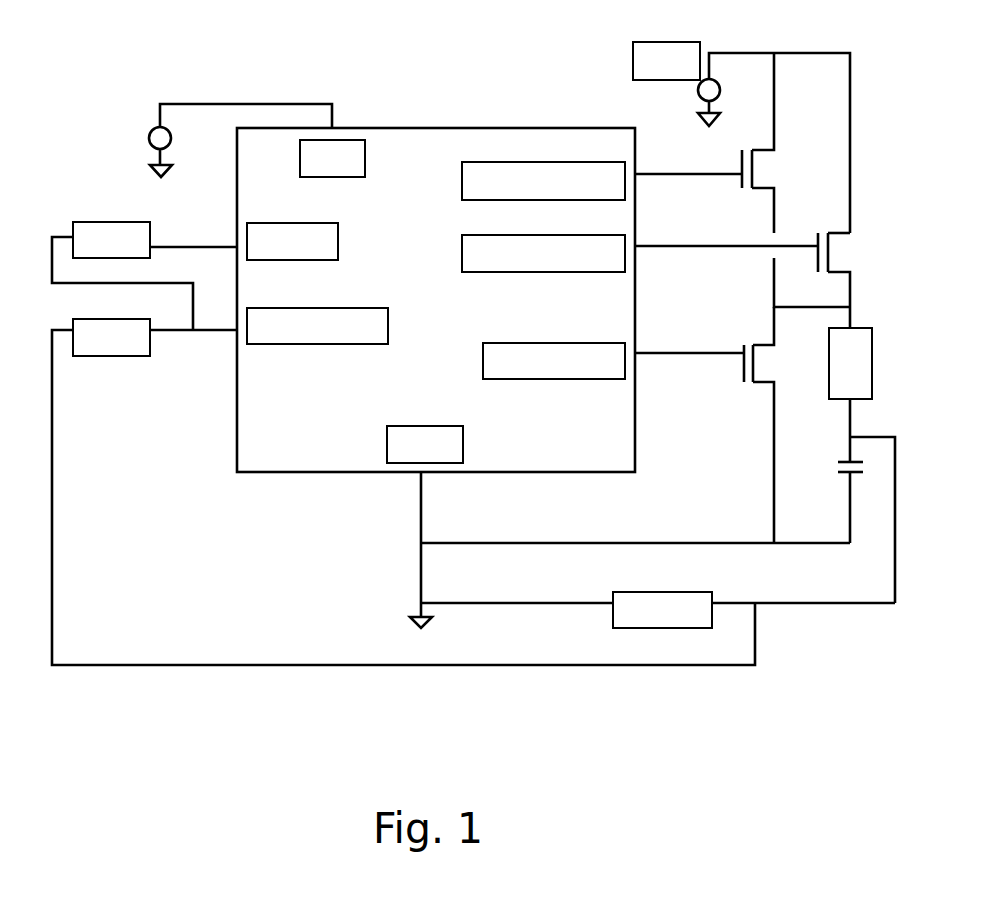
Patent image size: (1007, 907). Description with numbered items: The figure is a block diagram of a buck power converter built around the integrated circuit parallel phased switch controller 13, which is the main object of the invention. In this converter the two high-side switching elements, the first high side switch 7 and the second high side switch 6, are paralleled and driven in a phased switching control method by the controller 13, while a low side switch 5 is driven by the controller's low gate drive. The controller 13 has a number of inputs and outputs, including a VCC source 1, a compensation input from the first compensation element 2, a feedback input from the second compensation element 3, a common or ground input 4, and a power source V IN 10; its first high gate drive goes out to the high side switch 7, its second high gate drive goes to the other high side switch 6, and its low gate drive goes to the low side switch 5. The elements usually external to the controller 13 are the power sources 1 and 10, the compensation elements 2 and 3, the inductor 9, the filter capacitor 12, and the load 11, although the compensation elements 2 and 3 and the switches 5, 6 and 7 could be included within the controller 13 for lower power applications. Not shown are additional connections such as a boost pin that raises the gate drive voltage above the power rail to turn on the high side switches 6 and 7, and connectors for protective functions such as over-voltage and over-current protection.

The VCC source 1 is at (150, 137).
The compensation element Z2 2 is at (113, 222).
The compensation element Z1 3 is at (133, 357).
The ground input 4 is at (410, 623).
The low side switch Q3 5 is at (774, 360).
The high side switch Q2 6 is at (855, 252).
The high side switch Q1 7 is at (775, 173).
The inductor 9 is at (872, 395).
The power source V IN 10 is at (721, 90).
The load 11 is at (698, 592).
The filter capacitor 12 is at (830, 468).
The integrated circuit controller 13 is at (392, 127).